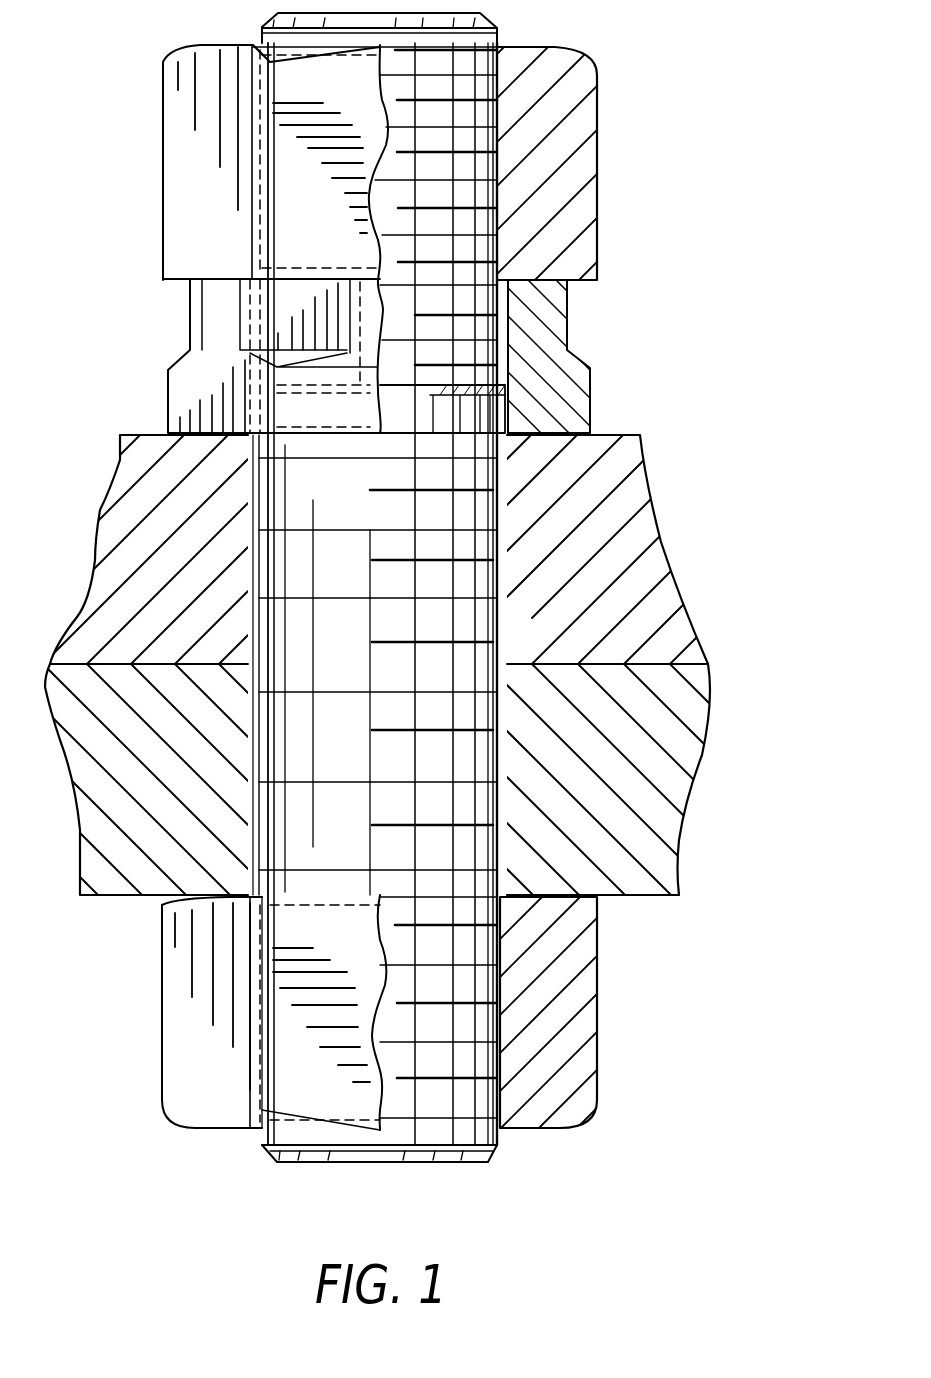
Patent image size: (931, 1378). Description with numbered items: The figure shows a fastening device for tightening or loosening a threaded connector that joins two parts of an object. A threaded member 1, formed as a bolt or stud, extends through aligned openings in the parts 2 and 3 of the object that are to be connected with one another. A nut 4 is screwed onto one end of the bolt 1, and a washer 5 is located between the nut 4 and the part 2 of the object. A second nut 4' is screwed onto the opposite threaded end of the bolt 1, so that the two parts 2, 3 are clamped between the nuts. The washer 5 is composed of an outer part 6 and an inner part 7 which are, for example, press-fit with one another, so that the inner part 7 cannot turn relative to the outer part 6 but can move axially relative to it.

The threaded member 1 is at (290, 815).
The part of an object 2 is at (655, 617).
The part of an object 3 is at (666, 770).
The nut 4 is at (427, 147).
The nut 4' is at (415, 1018).
The washer 5 is at (605, 294).
The outer part 6 is at (548, 323).
The inner part 7 is at (493, 408).